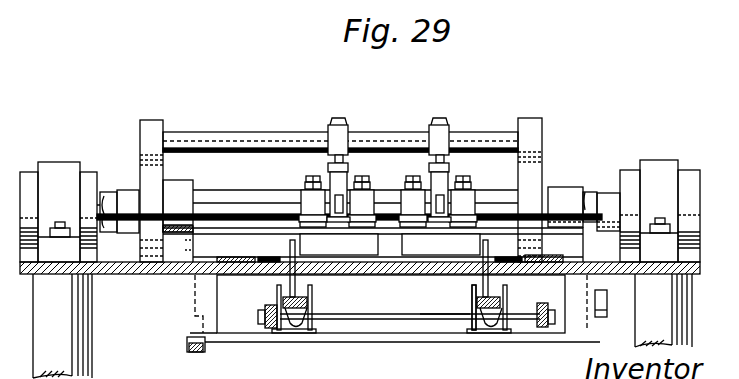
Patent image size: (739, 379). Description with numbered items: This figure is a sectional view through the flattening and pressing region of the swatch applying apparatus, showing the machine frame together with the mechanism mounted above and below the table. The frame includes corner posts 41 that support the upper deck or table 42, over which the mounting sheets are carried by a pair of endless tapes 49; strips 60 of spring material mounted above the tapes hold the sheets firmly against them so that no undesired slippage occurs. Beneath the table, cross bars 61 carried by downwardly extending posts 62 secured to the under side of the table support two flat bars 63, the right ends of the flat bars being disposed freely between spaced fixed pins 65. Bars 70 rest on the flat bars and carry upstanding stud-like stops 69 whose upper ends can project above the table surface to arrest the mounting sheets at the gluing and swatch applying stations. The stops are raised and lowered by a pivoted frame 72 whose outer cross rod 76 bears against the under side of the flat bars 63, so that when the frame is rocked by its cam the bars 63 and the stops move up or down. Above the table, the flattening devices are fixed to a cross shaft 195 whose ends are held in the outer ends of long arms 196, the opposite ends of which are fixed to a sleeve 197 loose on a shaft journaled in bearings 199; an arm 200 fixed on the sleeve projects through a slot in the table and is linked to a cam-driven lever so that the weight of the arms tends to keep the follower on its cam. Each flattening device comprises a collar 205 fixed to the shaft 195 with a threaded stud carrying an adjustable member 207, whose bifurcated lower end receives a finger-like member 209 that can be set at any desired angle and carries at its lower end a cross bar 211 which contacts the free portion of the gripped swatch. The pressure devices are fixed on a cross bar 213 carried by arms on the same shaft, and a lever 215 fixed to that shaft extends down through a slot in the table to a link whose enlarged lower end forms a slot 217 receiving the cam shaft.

The corner posts 41 is at (88, 332).
The upper deck or table 42 is at (700, 265).
The endless tapes 49 is at (487, 256).
The strips of spring material 60 is at (270, 266).
The cross bars 61 is at (338, 334).
The downwardly extending posts 62 is at (212, 300).
The flat bars 63 is at (310, 310).
The fixed pins 65 is at (295, 332).
The stops 69 is at (472, 283).
The bars 70 is at (305, 303).
The frame 72 is at (546, 292).
The cross rod 76 is at (438, 313).
The cross shaft 195 is at (298, 133).
The arms 196 is at (531, 133).
The sleeve 197 is at (258, 175).
The bearings 199 is at (50, 163).
The arm 200 is at (187, 348).
The collar 205 is at (428, 120).
The member 207 is at (348, 180).
The finger-like member 209 is at (340, 258).
The cross bar 211 is at (290, 224).
The cross bar 213 is at (200, 212).
The lever 215 is at (600, 318).
The slot 217 is at (124, 232).